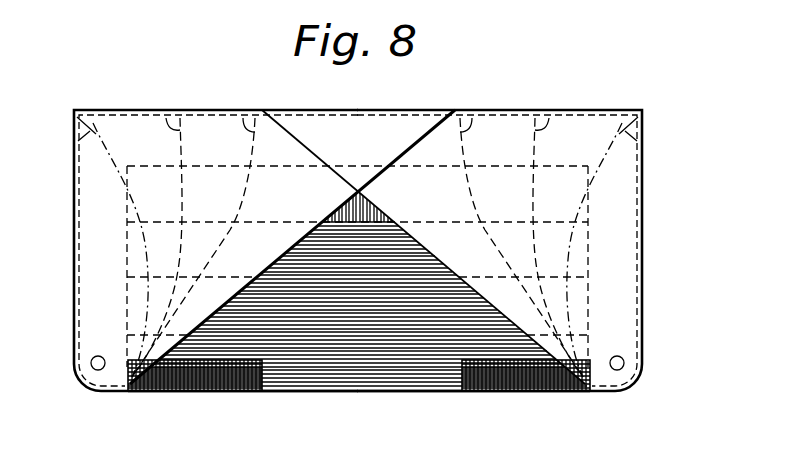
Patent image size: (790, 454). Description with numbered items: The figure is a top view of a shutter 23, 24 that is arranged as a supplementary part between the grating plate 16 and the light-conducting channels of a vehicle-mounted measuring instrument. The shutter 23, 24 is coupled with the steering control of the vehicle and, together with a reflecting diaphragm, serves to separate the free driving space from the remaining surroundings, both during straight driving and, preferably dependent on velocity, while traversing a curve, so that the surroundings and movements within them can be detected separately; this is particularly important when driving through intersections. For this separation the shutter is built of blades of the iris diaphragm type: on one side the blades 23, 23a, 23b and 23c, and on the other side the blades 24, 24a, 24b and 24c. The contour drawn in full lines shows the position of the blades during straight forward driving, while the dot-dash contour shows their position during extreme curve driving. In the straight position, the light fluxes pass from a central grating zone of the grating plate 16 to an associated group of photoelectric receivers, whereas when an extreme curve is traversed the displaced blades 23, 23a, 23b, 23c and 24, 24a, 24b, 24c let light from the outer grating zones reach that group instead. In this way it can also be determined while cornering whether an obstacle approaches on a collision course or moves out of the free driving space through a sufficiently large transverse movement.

The grating plate 16 is at (366, 378).
The shutter blade 23 is at (80, 297).
The shutter blade 23a is at (240, 110).
The shutter blade 23b is at (165, 110).
The shutter blade 23c is at (98, 112).
The shutter blade 24 is at (632, 298).
The shutter blade 24a is at (483, 108).
The shutter blade 24b is at (560, 110).
The shutter blade 24c is at (629, 112).